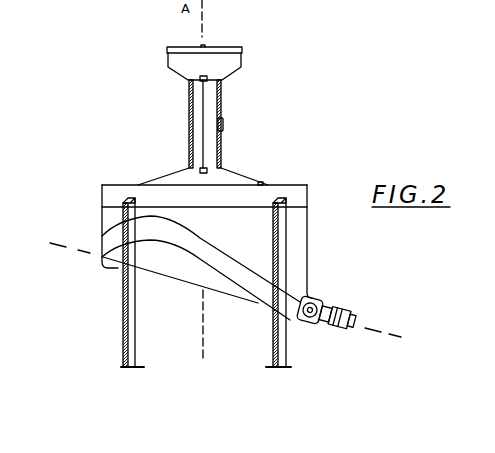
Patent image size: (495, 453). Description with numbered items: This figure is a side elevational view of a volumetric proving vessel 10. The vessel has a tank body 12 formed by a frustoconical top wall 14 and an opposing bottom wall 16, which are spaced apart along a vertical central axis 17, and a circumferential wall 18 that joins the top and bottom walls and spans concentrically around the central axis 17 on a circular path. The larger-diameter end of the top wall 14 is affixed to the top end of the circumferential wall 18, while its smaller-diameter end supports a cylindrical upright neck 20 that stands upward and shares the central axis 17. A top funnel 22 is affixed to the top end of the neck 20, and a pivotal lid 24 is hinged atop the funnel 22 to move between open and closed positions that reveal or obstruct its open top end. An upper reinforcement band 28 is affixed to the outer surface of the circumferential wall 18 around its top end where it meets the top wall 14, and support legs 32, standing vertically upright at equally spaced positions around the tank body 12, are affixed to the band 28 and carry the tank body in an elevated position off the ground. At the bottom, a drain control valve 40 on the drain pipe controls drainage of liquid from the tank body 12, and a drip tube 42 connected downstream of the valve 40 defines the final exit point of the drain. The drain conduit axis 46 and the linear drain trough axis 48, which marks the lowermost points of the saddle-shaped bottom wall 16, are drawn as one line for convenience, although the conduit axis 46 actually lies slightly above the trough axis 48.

The volumetric proving vessel 10 is at (308, 123).
The tank body 12 is at (115, 170).
The top wall 14 is at (230, 173).
The bottom wall 16 is at (172, 268).
The vertical central axis 17 is at (202, 325).
The circumferential wall 18 is at (302, 242).
The upright neck 20 is at (213, 104).
The top funnel 22 is at (231, 72).
The pivotal lid 24 is at (222, 47).
The upper reinforcement band 28 is at (293, 187).
The support legs 32 is at (123, 322).
The drain control valve 40 is at (306, 322).
The drip tube 42 is at (357, 322).
The drain conduit axis 46 is at (394, 336).
The drain trough axis 48 is at (225, 290).